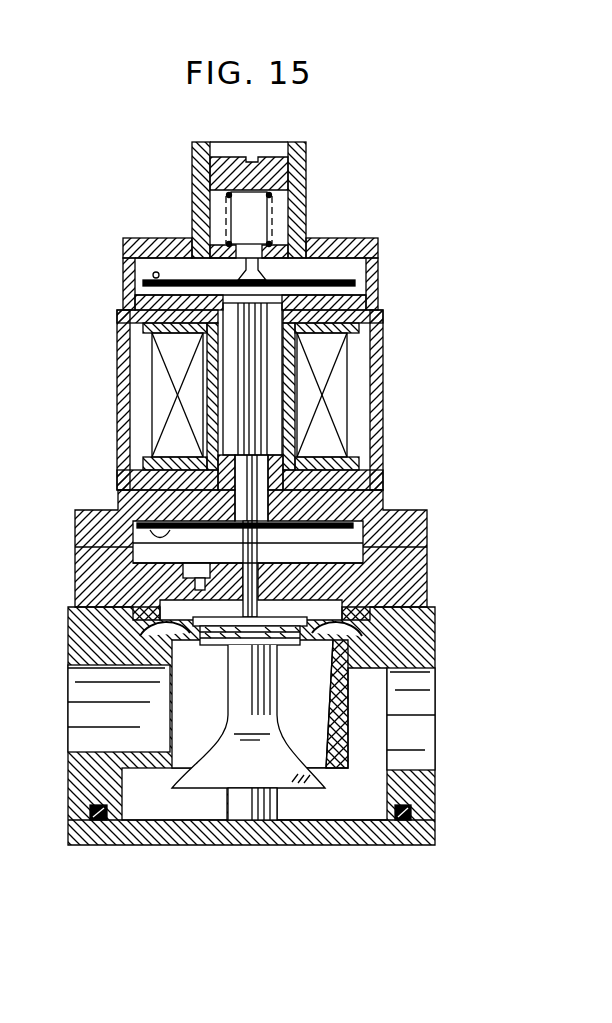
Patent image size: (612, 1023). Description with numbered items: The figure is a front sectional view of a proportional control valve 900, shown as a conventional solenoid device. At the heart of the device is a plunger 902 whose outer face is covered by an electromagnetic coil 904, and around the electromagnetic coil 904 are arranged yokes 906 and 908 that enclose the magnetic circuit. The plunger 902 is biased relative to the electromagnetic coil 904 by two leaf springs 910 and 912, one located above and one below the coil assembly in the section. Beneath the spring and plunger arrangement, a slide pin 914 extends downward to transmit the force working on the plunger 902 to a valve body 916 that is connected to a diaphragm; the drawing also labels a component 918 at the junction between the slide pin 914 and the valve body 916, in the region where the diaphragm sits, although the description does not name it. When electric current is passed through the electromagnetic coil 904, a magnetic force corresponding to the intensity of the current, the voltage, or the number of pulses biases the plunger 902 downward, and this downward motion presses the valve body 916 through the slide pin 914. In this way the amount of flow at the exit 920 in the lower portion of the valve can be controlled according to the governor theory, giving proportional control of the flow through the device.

The proportional control valve 900 is at (425, 292).
The plunger 902 is at (245, 400).
The electromagnetic coil 904 is at (340, 405).
The yoke 906 is at (118, 340).
The yoke 908 is at (118, 482).
The leaf spring 910 is at (322, 283).
The leaf spring 912 is at (366, 500).
The slide pin 914 is at (140, 548).
The valve body 916 is at (305, 776).
The seal assembly 918 is at (340, 632).
The exit 920 is at (405, 737).